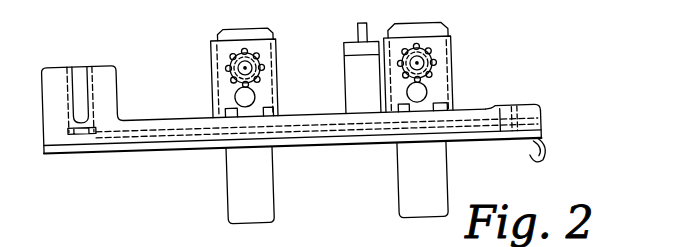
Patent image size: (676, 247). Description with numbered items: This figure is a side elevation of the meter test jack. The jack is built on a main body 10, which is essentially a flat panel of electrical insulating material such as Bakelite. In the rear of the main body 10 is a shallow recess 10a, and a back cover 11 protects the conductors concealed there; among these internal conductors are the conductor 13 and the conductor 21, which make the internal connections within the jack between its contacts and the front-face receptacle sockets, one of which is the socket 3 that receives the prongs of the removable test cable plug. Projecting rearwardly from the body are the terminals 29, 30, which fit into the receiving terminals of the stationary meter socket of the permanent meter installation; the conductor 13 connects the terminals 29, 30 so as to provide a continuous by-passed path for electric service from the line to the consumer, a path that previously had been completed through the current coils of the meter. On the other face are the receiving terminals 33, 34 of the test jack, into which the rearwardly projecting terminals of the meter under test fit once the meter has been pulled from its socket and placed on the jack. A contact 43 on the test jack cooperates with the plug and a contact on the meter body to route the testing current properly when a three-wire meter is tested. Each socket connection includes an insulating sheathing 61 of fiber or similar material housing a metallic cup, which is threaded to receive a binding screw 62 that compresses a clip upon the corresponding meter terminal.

The receptacle socket 3 is at (96, 92).
The main body 10 is at (530, 129).
The shallow recess 10a is at (482, 124).
The back cover 11 is at (472, 141).
The conductor 13 is at (349, 137).
The conductor 21 is at (297, 127).
The rearwardly projecting terminal 29 is at (438, 189).
The rearwardly projecting terminal 30 is at (263, 181).
The receiving terminal 33 is at (447, 45).
The receiving terminal 34 is at (272, 55).
The contact 43 is at (363, 29).
The sheathing 61 is at (442, 94).
The binding screw 62 is at (445, 73).